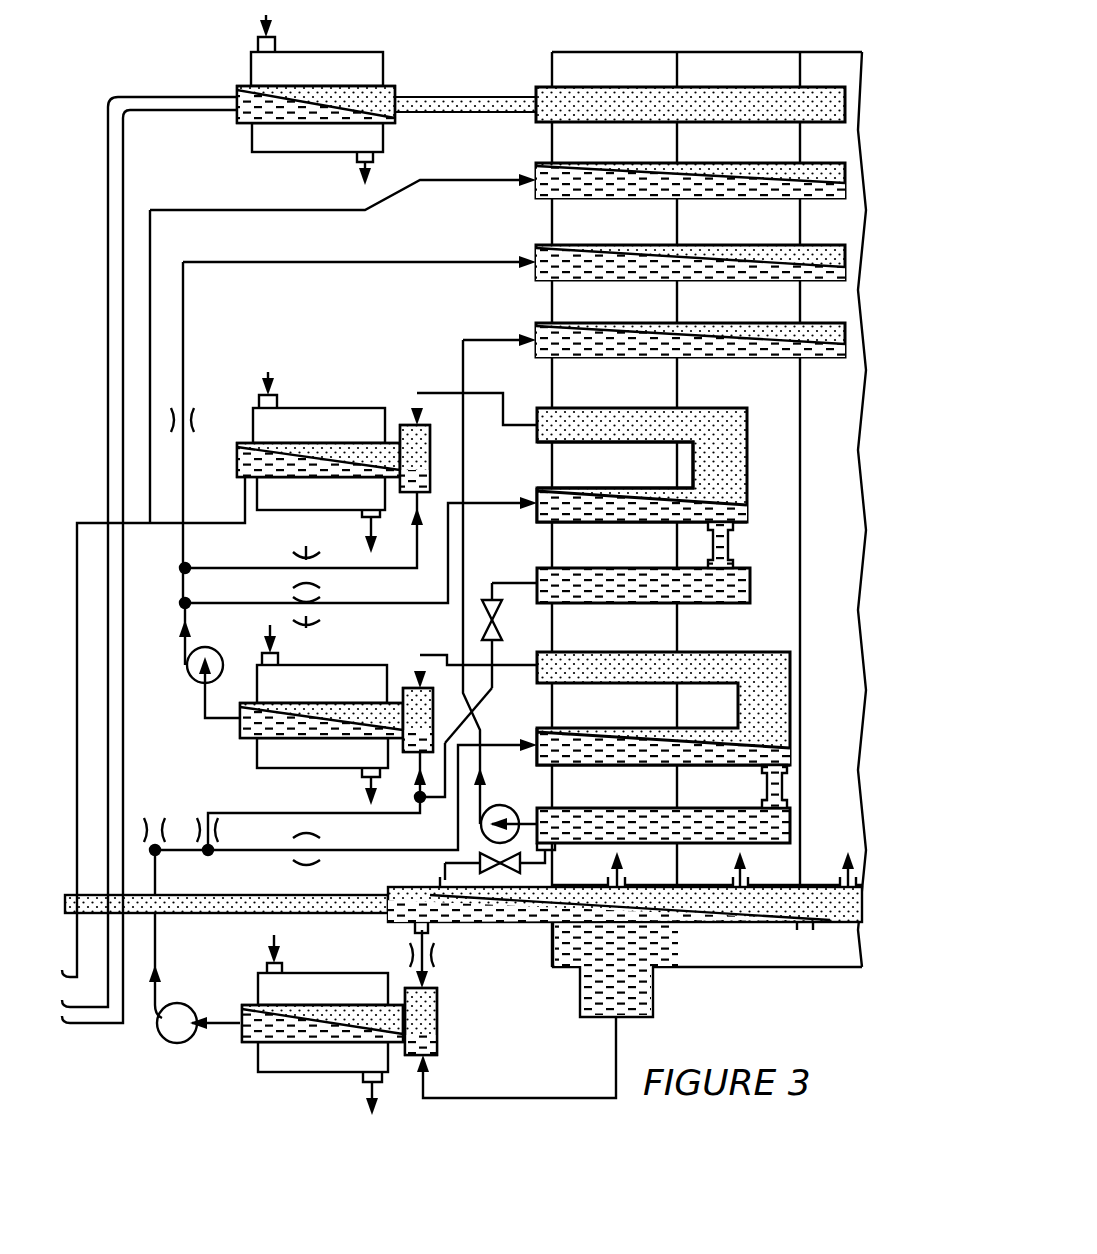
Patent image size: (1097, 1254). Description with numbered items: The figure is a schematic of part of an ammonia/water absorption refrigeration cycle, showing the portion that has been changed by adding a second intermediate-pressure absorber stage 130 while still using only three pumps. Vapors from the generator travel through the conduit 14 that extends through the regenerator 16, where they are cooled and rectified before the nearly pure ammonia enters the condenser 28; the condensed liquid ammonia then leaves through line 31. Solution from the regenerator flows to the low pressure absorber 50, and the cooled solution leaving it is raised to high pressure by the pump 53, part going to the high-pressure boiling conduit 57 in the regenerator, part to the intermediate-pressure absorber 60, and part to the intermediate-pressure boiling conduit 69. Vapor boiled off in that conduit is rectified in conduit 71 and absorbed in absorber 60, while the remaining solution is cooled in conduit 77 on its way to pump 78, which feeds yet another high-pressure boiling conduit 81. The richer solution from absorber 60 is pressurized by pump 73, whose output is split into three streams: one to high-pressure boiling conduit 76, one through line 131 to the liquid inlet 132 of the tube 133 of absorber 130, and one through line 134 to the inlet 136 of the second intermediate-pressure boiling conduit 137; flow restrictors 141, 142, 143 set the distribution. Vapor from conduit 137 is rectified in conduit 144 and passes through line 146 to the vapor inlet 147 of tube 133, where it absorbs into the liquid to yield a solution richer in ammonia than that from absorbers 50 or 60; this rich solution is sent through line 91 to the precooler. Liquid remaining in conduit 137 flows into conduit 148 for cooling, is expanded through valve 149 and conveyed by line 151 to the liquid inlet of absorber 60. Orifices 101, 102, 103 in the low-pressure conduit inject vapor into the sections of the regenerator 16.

The conduit 14 is at (666, 86).
The regenerator 16 is at (542, 72).
The condenser 28 is at (395, 68).
The line 31 is at (125, 173).
The low pressure absorber 50 is at (352, 958).
The pump 53 is at (166, 1040).
The high-pressure boiling conduit 57 is at (666, 162).
The intermediate-pressure absorber 60 is at (350, 655).
The intermediate-pressure boiling conduit 69 is at (668, 728).
The conduit 71 is at (668, 652).
The pump 73 is at (222, 651).
The high-pressure boiling conduit 76 is at (666, 244).
The conduit 77 is at (668, 808).
The pump 78 is at (522, 796).
The high-pressure boiling conduit 81 is at (666, 322).
The line 91 is at (228, 522).
The orifice 101 is at (626, 878).
The orifice 102 is at (744, 878).
The orifice 103 is at (822, 884).
The second intermediate-pressure absorber stage 130 is at (333, 451).
The line 131 is at (256, 567).
The liquid inlet 132 is at (390, 531).
The tube 133 is at (333, 442).
The line 134 is at (262, 602).
The inlet 136 is at (534, 507).
The second intermediate-pressure boiling conduit 137 is at (672, 486).
The flow restrictor 141 is at (194, 420).
The flow restrictor 142 is at (303, 540).
The flow restrictor 143 is at (320, 627).
The conduit 144 is at (668, 408).
The line 146 is at (505, 408).
The vapor inlet 147 is at (412, 422).
The conduit 148 is at (668, 568).
The valve 149 is at (500, 620).
The line 151 is at (480, 706).